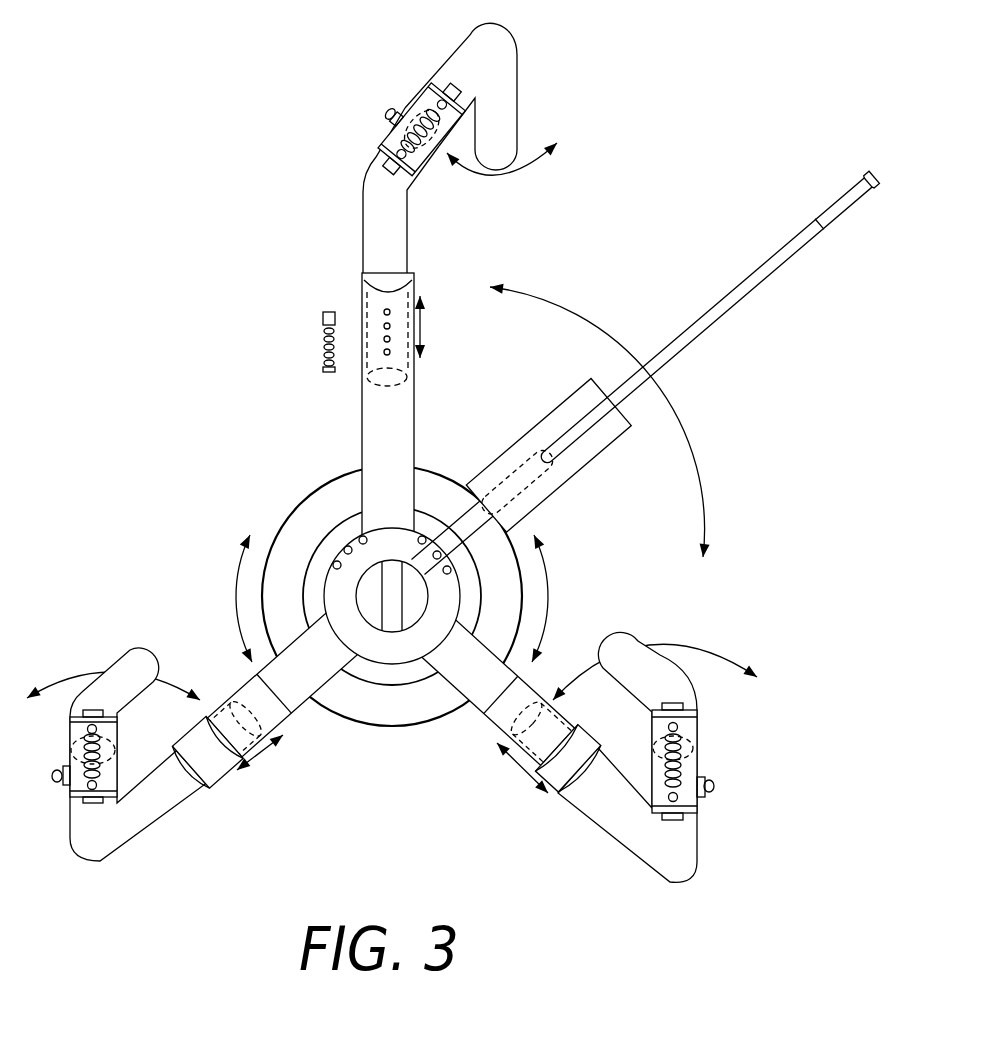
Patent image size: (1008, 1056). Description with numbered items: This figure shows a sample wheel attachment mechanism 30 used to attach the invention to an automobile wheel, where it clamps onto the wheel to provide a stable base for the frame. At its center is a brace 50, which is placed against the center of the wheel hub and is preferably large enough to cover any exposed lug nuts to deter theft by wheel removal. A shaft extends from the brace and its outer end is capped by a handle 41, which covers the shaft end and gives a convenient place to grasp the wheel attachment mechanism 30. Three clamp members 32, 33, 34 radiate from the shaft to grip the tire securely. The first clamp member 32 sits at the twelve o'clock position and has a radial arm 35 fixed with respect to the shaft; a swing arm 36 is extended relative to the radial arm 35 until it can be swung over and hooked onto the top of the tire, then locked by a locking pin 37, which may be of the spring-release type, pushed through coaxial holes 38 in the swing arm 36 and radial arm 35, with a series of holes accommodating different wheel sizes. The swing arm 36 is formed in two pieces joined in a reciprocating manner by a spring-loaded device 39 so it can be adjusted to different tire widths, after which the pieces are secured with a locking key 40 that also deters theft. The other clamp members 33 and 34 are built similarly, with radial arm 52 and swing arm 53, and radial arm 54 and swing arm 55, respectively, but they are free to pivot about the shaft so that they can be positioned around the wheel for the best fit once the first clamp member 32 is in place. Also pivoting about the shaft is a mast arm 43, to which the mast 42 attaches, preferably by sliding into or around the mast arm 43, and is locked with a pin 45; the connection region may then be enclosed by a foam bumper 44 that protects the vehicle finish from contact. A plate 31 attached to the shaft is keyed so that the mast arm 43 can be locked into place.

The wheel attachment mechanism 30 is at (398, 785).
The plate 31 is at (330, 575).
The clamp member 32 is at (361, 207).
The clamp member 33 is at (233, 783).
The clamp member 34 is at (710, 800).
The radial arm 35 is at (378, 437).
The swing arm 36 is at (500, 106).
The locking pin 37 is at (328, 310).
The coaxial holes 38 is at (392, 308).
The spring-loaded device 39 is at (411, 112).
The locking key 40 is at (385, 113).
The handle 41 is at (390, 612).
The mast 42 is at (847, 210).
The mast arm 43 is at (462, 527).
The foam bumper 44 is at (593, 437).
The pin 45 is at (503, 497).
The brace 50 is at (405, 703).
The radial arm 52 is at (310, 677).
The swing arm 53 is at (145, 798).
The radial arm 54 is at (488, 687).
The swing arm 55 is at (613, 803).